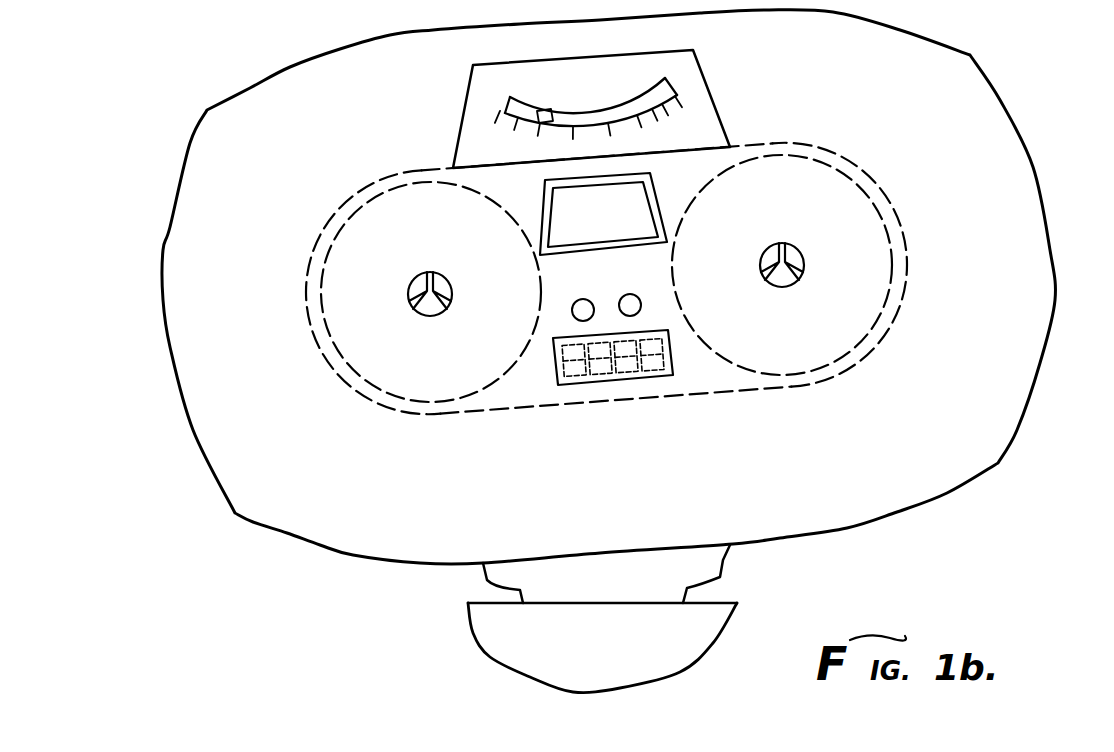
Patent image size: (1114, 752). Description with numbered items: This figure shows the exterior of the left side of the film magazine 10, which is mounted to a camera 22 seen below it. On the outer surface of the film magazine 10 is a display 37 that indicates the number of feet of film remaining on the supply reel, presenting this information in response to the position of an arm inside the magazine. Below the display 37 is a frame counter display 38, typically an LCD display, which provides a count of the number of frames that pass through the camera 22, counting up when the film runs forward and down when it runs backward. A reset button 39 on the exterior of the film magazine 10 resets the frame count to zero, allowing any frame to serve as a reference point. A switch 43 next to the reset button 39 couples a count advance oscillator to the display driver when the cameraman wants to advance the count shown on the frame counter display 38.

The film magazine 10 is at (1058, 343).
The camera 22 is at (481, 634).
The display 37 is at (692, 73).
The frame counter display 38 is at (645, 376).
The reset button 39 is at (628, 294).
The switch 43 is at (584, 299).